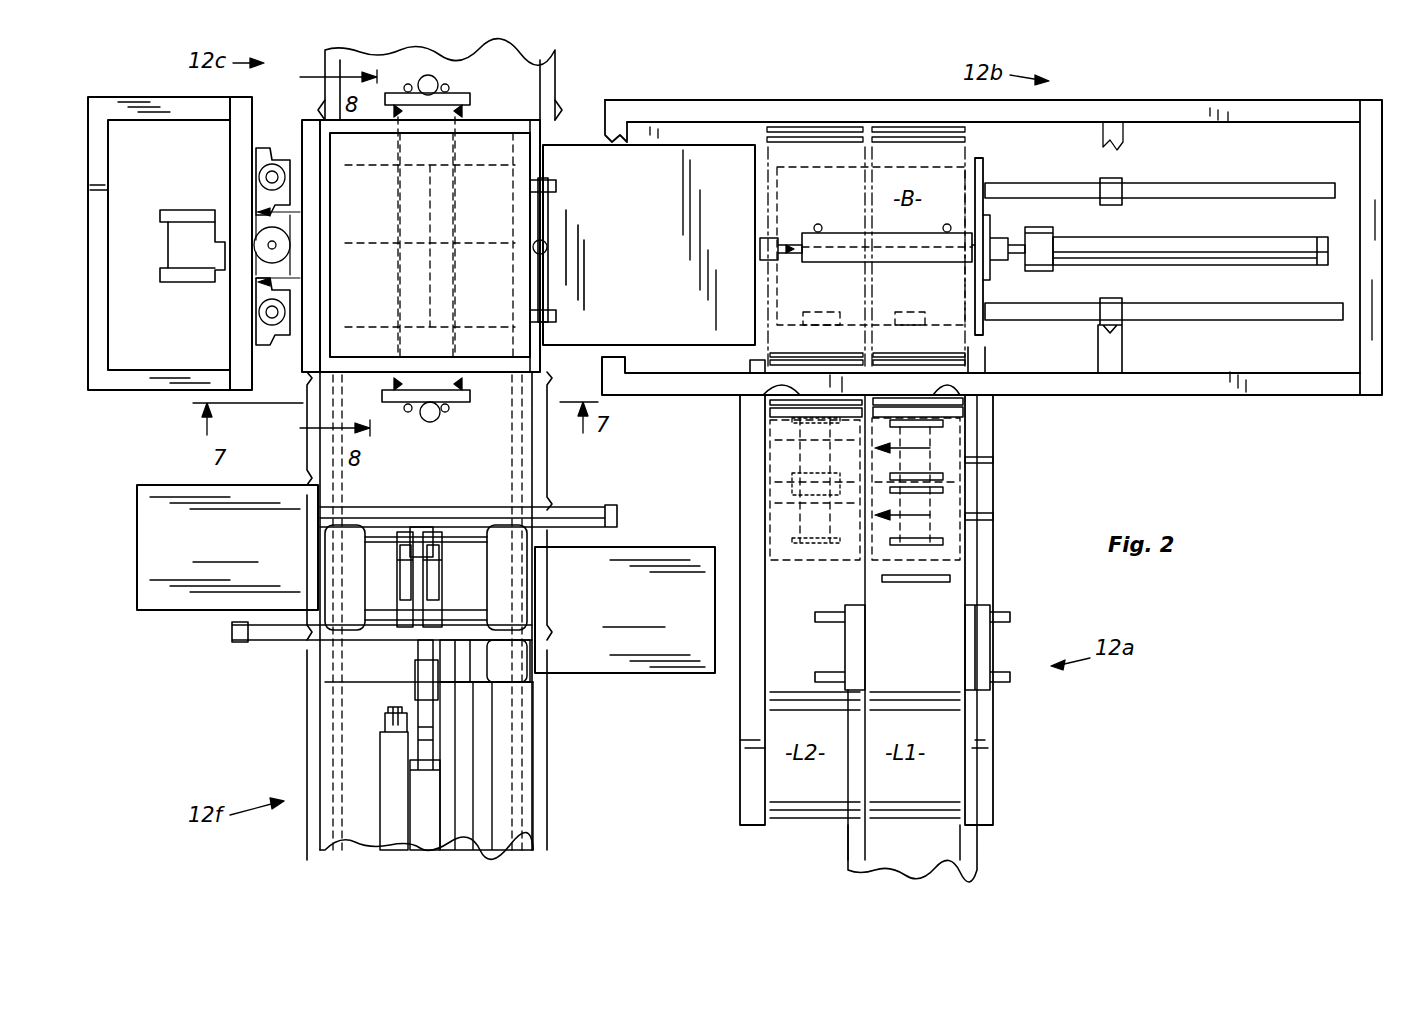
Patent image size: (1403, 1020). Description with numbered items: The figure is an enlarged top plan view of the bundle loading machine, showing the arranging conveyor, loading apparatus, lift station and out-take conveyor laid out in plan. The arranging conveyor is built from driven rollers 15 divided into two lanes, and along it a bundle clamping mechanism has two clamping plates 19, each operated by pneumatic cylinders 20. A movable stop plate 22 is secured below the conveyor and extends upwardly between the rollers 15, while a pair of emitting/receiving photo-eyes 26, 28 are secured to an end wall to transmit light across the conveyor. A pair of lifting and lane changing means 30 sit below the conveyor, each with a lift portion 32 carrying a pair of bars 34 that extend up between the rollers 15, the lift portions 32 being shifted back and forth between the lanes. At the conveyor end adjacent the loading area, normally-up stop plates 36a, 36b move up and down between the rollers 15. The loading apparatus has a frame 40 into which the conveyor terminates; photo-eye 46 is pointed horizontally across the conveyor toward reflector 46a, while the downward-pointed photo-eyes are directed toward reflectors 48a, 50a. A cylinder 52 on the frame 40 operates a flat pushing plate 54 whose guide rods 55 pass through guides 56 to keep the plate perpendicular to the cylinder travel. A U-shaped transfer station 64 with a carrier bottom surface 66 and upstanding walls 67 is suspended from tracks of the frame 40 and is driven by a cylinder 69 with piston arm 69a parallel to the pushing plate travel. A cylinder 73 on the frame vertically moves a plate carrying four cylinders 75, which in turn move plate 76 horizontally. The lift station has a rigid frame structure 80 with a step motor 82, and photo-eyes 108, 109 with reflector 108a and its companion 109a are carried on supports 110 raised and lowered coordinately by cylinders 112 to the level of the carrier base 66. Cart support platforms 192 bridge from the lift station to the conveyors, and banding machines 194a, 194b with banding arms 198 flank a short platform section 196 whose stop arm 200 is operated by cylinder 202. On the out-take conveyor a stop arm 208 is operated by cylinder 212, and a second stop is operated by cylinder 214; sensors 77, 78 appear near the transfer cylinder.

The driven rollers 15 is at (960, 708).
The clamping plates 19 is at (850, 640).
The pneumatic cylinders 20 is at (828, 614).
The movable stop plate 22 is at (882, 578).
The emitting/receiving photo-eye 26 is at (980, 517).
The emitting/receiving photo-eye 28 is at (968, 460).
The lifting and lane changing means 30 is at (915, 460).
The lift portions 32 is at (770, 450).
The bars 34 is at (785, 545).
The stop plate 36a is at (960, 392).
The stop plate 36b is at (770, 392).
The frame 40 is at (1252, 110).
The emitting/receiving photo-eye 46 is at (757, 360).
The reflector 46a is at (980, 360).
The reflector 48a is at (819, 248).
The reflector 50a is at (918, 248).
The cylinder 52 is at (1215, 265).
The flat pushing plate 54 is at (983, 178).
The guide rods 55 is at (1302, 212).
The guides 56 is at (1122, 180).
The transfer station 64 is at (728, 145).
The carrier bottom surface 66 is at (590, 165).
The walls 67 is at (665, 145).
The cylinder 69 is at (845, 233).
The piston arm 69a is at (798, 233).
The cylinder 73 is at (547, 247).
The cylinders 75 is at (548, 186).
The movable plate 76 is at (530, 295).
The sensor 77 is at (947, 232).
The sensor 78 is at (818, 232).
The rigid frame structure 80 is at (170, 135).
The step motor 82 is at (180, 240).
The emitting/receiving photo-eye 108 is at (398, 402).
The reflector 108a is at (398, 110).
The emitting/receiving photo-eye 109 is at (457, 402).
The pin axis 109a is at (455, 110).
The supports 110 is at (445, 388).
The pneumatic cylinders 112 is at (448, 95).
The cart support platforms 192 is at (520, 86).
The banding machine 194a is at (227, 547).
The banding machine 194b is at (625, 610).
The short platform section 196 is at (527, 578).
The banding arms 198 is at (617, 516).
The stop arm 200 is at (410, 535).
The cylinder 202 is at (440, 540).
The stop arm 208 is at (445, 682).
The cylinder 212 is at (427, 813).
The cylinder 214 is at (390, 765).